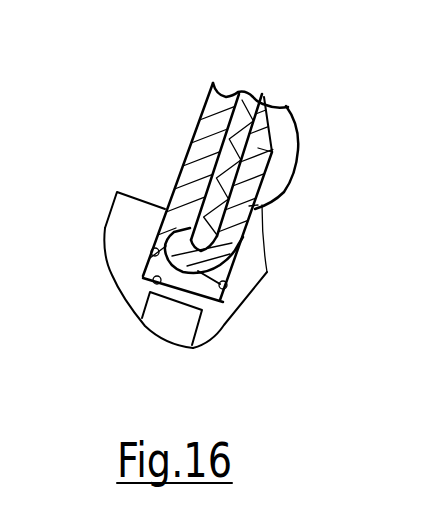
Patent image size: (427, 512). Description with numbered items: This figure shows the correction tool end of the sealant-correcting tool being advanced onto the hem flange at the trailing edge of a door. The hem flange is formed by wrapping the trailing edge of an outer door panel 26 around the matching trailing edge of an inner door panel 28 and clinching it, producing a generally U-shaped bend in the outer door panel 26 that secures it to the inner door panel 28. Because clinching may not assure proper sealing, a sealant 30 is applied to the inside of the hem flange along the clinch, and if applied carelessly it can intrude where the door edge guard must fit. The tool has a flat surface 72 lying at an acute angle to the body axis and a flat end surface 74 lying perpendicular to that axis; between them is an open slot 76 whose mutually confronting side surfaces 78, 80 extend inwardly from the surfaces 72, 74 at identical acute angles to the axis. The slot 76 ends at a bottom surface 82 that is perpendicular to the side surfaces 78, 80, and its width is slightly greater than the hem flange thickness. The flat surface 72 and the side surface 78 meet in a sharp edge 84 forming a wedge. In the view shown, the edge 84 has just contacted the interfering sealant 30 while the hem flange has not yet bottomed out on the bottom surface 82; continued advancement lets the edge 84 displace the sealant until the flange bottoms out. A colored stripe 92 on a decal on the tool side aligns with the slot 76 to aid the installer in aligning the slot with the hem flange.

The outer door panel 26 is at (213, 83).
The inner door panel 28 is at (250, 92).
The sealant 30 is at (288, 107).
The flat surface 72 is at (263, 240).
The flat end surface 74 is at (132, 192).
The open slot 76 is at (205, 295).
The side surface 78 is at (230, 283).
The side surface 80 is at (150, 255).
The bottom surface 82 is at (145, 278).
The sharp edge 84 is at (258, 209).
The colored stripe 92 is at (163, 313).